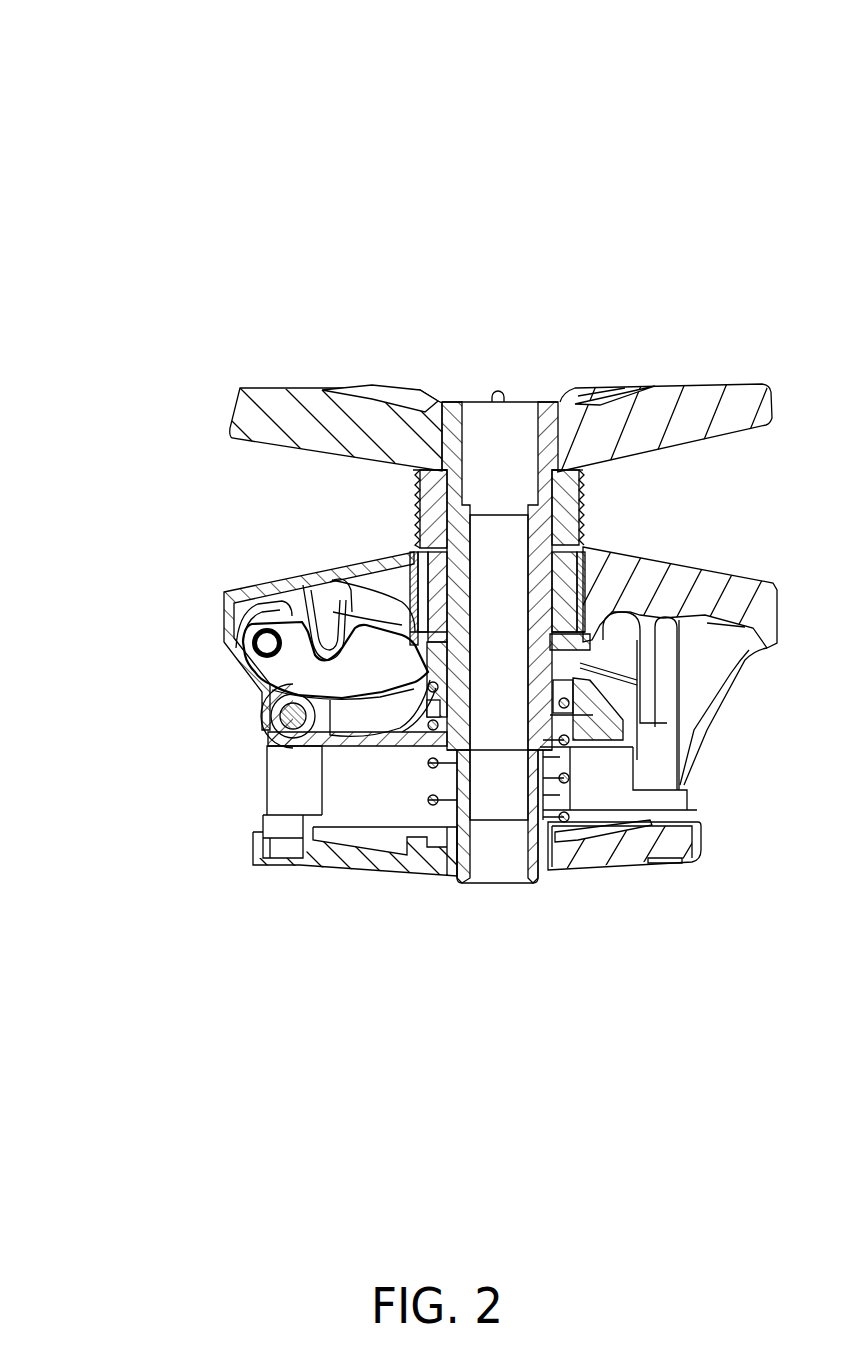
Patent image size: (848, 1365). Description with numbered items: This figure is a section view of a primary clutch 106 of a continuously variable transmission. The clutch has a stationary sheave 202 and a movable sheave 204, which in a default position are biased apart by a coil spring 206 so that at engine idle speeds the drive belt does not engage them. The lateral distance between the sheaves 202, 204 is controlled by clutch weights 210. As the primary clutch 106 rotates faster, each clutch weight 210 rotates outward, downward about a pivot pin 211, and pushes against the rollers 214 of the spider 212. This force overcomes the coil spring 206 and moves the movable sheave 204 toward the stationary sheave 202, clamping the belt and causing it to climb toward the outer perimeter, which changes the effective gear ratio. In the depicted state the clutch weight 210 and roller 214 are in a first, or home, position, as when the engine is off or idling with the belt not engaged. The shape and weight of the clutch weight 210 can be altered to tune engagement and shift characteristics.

The primary clutch 106 is at (88, 62).
The stationary sheave 202 is at (292, 448).
The movable sheave 204 is at (352, 566).
The coil spring 206 is at (428, 762).
The clutch weight 210 is at (390, 681).
The pivot pin 211 is at (260, 643).
The spider 212 is at (268, 742).
The roller 214 is at (285, 714).